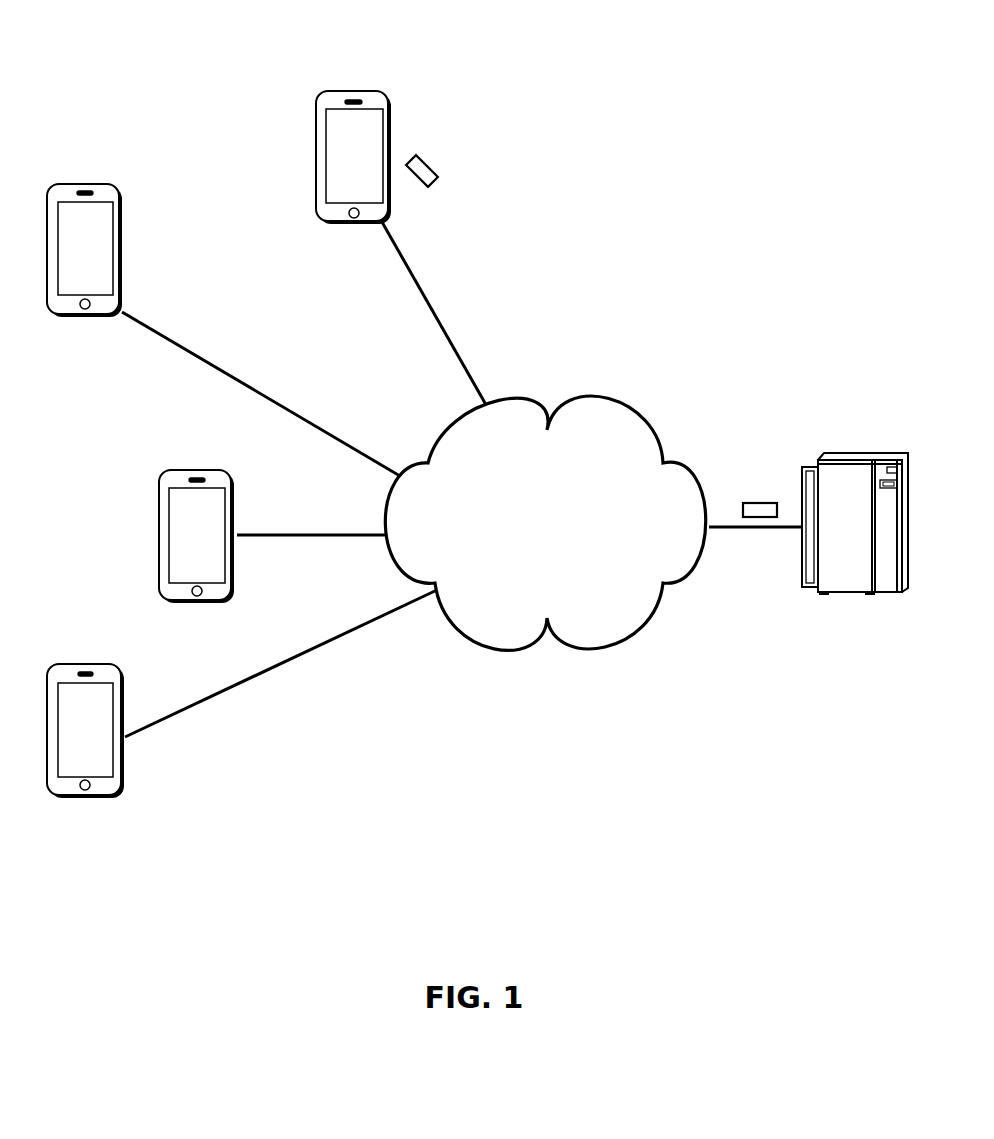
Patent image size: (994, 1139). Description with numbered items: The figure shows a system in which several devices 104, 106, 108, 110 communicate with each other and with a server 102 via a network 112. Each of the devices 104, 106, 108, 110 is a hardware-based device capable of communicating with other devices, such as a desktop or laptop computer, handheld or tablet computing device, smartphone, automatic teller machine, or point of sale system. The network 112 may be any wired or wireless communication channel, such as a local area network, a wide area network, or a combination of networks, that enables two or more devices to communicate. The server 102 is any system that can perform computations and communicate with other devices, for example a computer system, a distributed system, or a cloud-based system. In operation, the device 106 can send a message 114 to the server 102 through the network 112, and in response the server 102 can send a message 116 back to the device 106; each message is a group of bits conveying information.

The server 102 is at (855, 563).
The device 104 is at (85, 214).
The device 106 is at (353, 126).
The device 108 is at (197, 505).
The device 110 is at (85, 766).
The network 112 is at (545, 523).
The message 114 is at (439, 177).
The message 116 is at (760, 502).